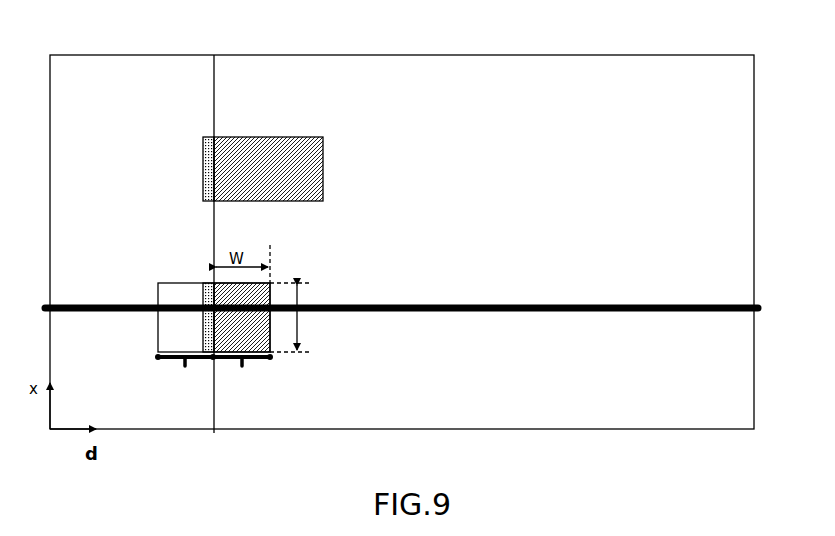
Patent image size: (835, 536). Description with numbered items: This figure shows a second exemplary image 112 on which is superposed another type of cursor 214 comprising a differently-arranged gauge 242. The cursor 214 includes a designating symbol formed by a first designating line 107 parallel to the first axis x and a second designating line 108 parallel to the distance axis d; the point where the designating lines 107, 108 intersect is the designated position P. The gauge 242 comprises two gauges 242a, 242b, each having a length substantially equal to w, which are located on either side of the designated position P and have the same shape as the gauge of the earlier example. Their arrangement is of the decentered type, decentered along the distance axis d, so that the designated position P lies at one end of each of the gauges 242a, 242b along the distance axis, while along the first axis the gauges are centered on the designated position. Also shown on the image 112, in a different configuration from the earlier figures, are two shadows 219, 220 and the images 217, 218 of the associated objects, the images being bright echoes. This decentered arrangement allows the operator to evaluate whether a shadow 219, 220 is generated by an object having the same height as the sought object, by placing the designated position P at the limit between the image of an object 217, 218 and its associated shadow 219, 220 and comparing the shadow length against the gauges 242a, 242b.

The image 112 is at (124, 66).
The first designating line 107 is at (214, 424).
The image of an object 217 is at (203, 163).
The shadow 219 is at (252, 137).
The second designating line 108 is at (82, 304).
The gauge 242 is at (156, 290).
The image of an object 218 is at (212, 305).
The designated position P is at (210, 305).
The shadow 220 is at (268, 290).
The gauge 242b is at (185, 374).
The gauge 242a is at (244, 374).
The cursor 214 is at (297, 372).